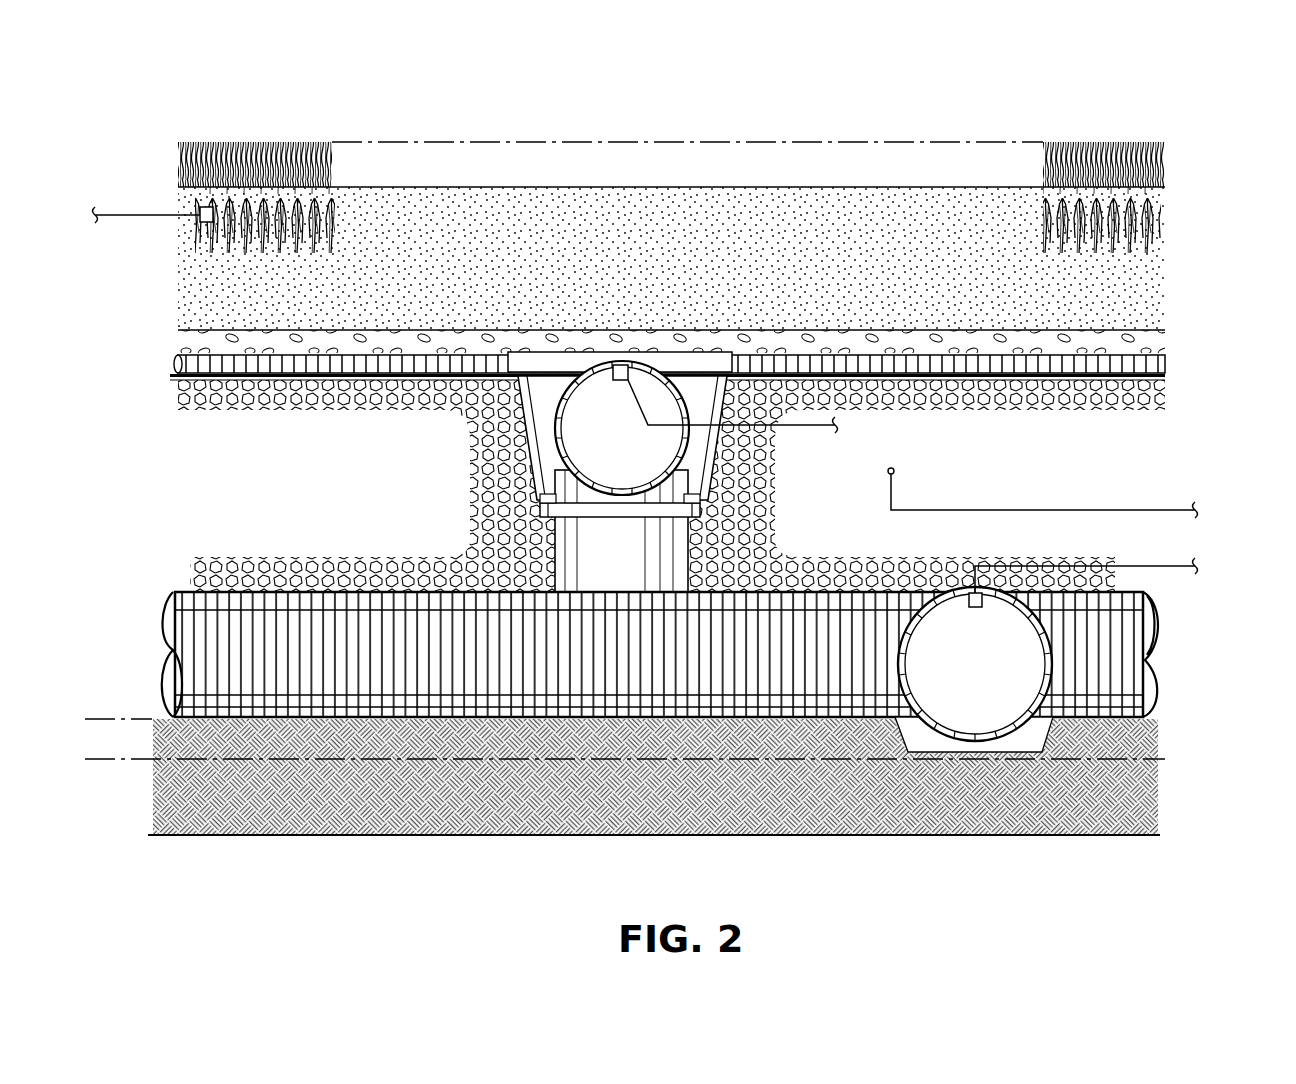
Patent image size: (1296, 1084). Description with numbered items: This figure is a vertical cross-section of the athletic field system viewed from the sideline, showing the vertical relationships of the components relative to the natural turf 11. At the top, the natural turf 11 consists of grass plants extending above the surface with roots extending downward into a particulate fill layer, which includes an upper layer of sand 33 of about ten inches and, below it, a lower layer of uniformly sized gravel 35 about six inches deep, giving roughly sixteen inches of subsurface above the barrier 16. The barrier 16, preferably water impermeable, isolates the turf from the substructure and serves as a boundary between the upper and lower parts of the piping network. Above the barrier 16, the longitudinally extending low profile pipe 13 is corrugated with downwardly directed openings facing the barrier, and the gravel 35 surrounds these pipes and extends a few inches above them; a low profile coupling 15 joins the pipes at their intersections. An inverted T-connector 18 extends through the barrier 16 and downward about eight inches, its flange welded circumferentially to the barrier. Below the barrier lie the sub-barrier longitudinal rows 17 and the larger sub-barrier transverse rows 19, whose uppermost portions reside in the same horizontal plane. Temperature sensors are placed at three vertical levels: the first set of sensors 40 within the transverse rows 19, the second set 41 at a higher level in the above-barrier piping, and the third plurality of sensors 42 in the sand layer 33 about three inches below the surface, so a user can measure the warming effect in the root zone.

The natural turf 11 is at (203, 150).
The longitudinally extending low profile pipe 13 is at (222, 357).
The low profile coupling 15 is at (670, 357).
The barrier 16 is at (178, 380).
The sub-barrier longitudinal rows 17 is at (162, 635).
The inverted T-connector 18 is at (675, 487).
The sub-barrier transverse rows 19 is at (932, 722).
The upper layer of sand 33 is at (1160, 250).
The lower layer of gravel 35 is at (1143, 338).
The first set of temperature sensors 40 is at (975, 607).
The second set of temperature sensors 41 is at (615, 380).
The third plurality of temperature sensors 42 is at (203, 222).